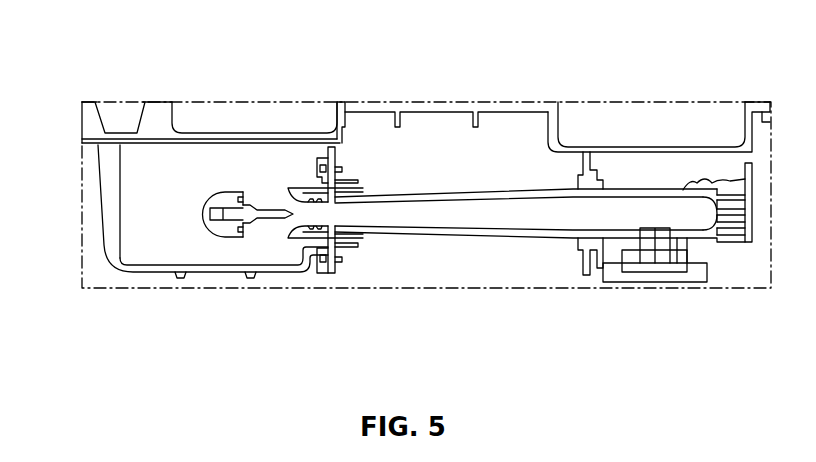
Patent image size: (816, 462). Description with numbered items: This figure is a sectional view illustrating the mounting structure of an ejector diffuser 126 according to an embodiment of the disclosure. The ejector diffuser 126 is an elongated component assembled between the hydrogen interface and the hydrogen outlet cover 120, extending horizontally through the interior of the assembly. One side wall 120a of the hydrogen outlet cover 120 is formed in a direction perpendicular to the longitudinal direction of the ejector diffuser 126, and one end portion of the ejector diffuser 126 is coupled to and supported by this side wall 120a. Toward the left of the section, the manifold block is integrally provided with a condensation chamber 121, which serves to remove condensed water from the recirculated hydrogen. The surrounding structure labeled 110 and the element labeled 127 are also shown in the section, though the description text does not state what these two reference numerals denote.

The upper housing 110 is at (155, 102).
The hydrogen outlet cover 120 is at (151, 290).
The side wall 120a is at (324, 160).
The condensation chamber 121 is at (150, 213).
The ejector diffuser 126 is at (493, 231).
The nozzle 127 is at (227, 197).